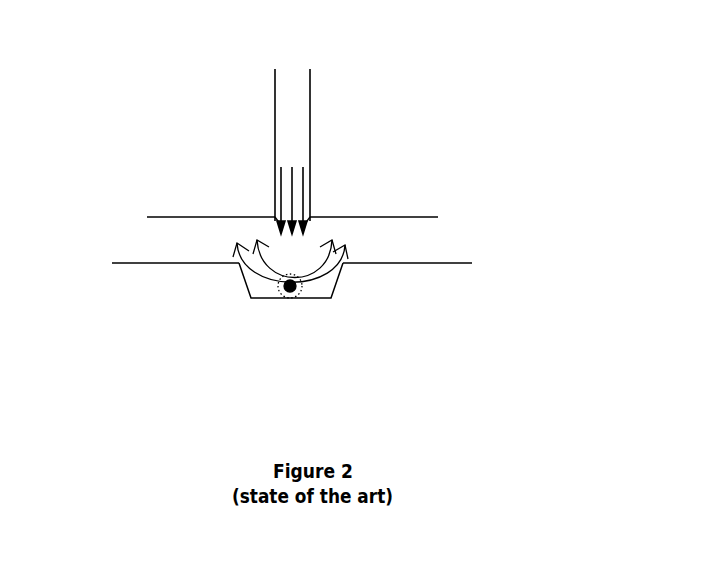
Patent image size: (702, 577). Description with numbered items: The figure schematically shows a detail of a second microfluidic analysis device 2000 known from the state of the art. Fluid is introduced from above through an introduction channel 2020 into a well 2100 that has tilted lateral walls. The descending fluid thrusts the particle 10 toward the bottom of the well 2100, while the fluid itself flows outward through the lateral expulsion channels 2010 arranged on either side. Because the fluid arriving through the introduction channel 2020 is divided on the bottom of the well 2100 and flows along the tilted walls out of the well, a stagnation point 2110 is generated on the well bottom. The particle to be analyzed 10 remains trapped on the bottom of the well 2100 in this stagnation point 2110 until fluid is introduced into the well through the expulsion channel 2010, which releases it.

The analysis device 2000 is at (565, 60).
The lateral expulsion channels 2010 is at (145, 233).
The introduction channel 2020 is at (298, 103).
The well 2100 is at (313, 253).
The stagnation point 2110 is at (280, 291).
The particle 10 is at (297, 293).